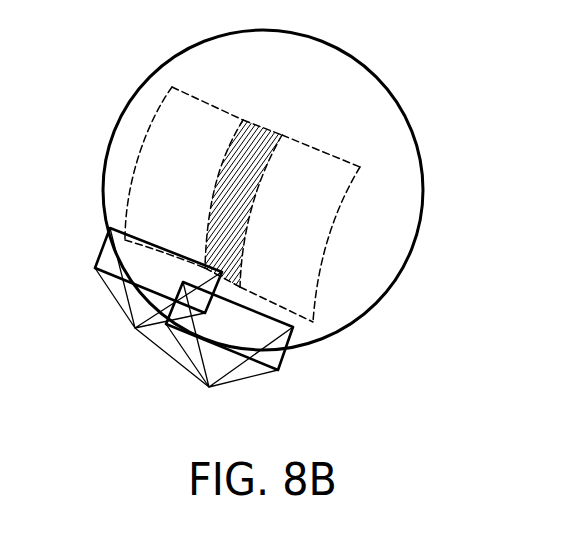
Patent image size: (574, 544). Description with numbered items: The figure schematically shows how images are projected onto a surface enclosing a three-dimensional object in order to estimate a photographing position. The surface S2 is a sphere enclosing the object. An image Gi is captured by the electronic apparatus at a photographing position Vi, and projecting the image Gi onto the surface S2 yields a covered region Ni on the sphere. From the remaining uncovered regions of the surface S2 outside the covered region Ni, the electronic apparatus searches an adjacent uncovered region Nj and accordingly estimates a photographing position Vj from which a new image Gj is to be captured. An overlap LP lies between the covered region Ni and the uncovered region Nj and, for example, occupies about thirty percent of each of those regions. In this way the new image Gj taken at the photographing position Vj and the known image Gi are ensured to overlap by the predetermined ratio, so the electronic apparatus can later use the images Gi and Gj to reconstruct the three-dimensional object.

The surface S2 is at (372, 70).
The covered region Ni is at (172, 87).
The uncovered region Nj is at (361, 167).
The overlap LP is at (282, 133).
The image Gi is at (102, 253).
The new image Gj is at (287, 356).
The photographing position Vi is at (158, 292).
The photographing position Vj is at (229, 354).